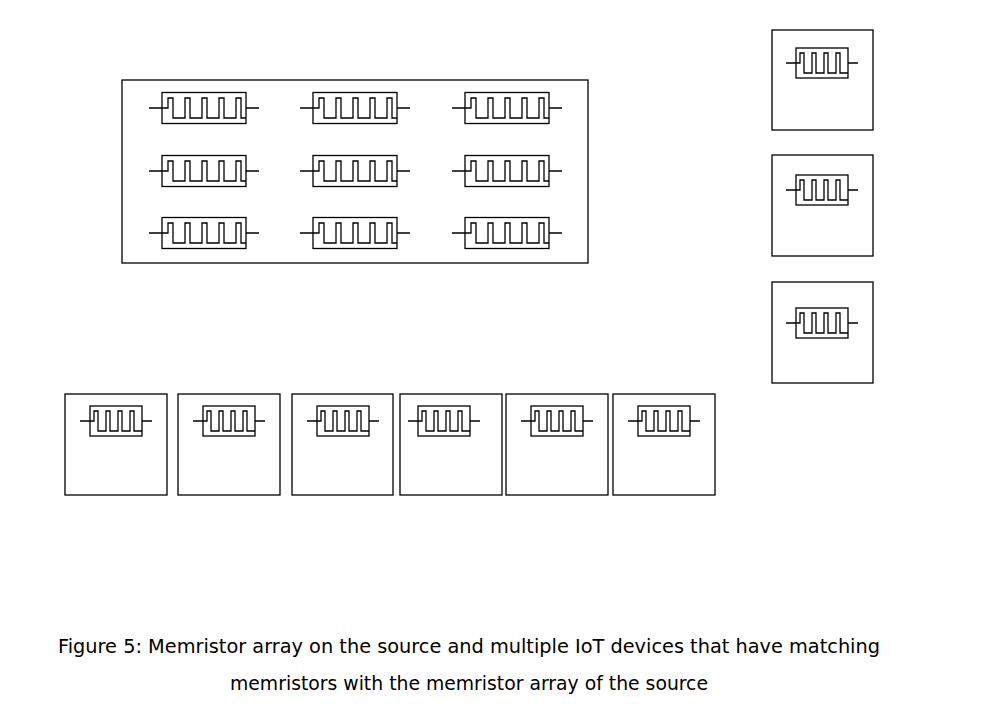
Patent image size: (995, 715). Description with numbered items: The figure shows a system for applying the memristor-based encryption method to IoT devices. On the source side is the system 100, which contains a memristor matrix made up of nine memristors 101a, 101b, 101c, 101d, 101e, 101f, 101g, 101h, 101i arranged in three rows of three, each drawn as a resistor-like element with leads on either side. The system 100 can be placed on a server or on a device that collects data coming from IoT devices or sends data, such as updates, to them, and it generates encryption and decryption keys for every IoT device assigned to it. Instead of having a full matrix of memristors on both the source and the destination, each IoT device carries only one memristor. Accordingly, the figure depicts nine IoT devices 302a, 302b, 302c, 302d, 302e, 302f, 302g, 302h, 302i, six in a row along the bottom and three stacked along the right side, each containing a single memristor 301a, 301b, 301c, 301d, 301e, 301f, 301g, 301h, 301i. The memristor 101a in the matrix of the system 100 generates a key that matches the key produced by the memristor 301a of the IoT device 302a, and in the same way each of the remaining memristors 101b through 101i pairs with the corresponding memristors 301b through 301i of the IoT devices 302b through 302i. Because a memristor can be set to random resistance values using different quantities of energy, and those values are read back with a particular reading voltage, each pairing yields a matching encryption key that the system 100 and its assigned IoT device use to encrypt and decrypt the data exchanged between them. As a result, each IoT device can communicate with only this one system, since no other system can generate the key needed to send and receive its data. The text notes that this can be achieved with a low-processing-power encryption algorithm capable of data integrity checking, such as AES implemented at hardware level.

The system 100 is at (122, 98).
The memristor 101a is at (182, 92).
The memristor 101b is at (333, 92).
The memristor 101c is at (497, 92).
The memristor 101d is at (162, 171).
The memristor 101e is at (313, 186).
The memristor 101f is at (548, 185).
The memristor 101g is at (175, 248).
The memristor 101h is at (350, 248).
The memristor 101i is at (505, 248).
The memristor of the IoT device 301a is at (93, 408).
The memristor of the IoT device 301b is at (228, 406).
The memristor of the IoT device 301c is at (352, 406).
The memristor of the IoT device 301d is at (450, 406).
The memristor of the IoT device 301e is at (565, 406).
The memristor of the IoT device 301f is at (678, 406).
The memristor of the IoT device 301g is at (795, 320).
The memristor of the IoT device 301h is at (790, 190).
The memristor of the IoT device 301i is at (795, 70).
The IoT device 302a is at (88, 495).
The IoT device 302b is at (228, 495).
The IoT device 302c is at (342, 495).
The IoT device 302d is at (445, 495).
The IoT device 302e is at (555, 495).
The IoT device 302f is at (660, 495).
The IoT device 302g is at (860, 383).
The IoT device 302h is at (873, 225).
The IoT device 302i is at (873, 60).